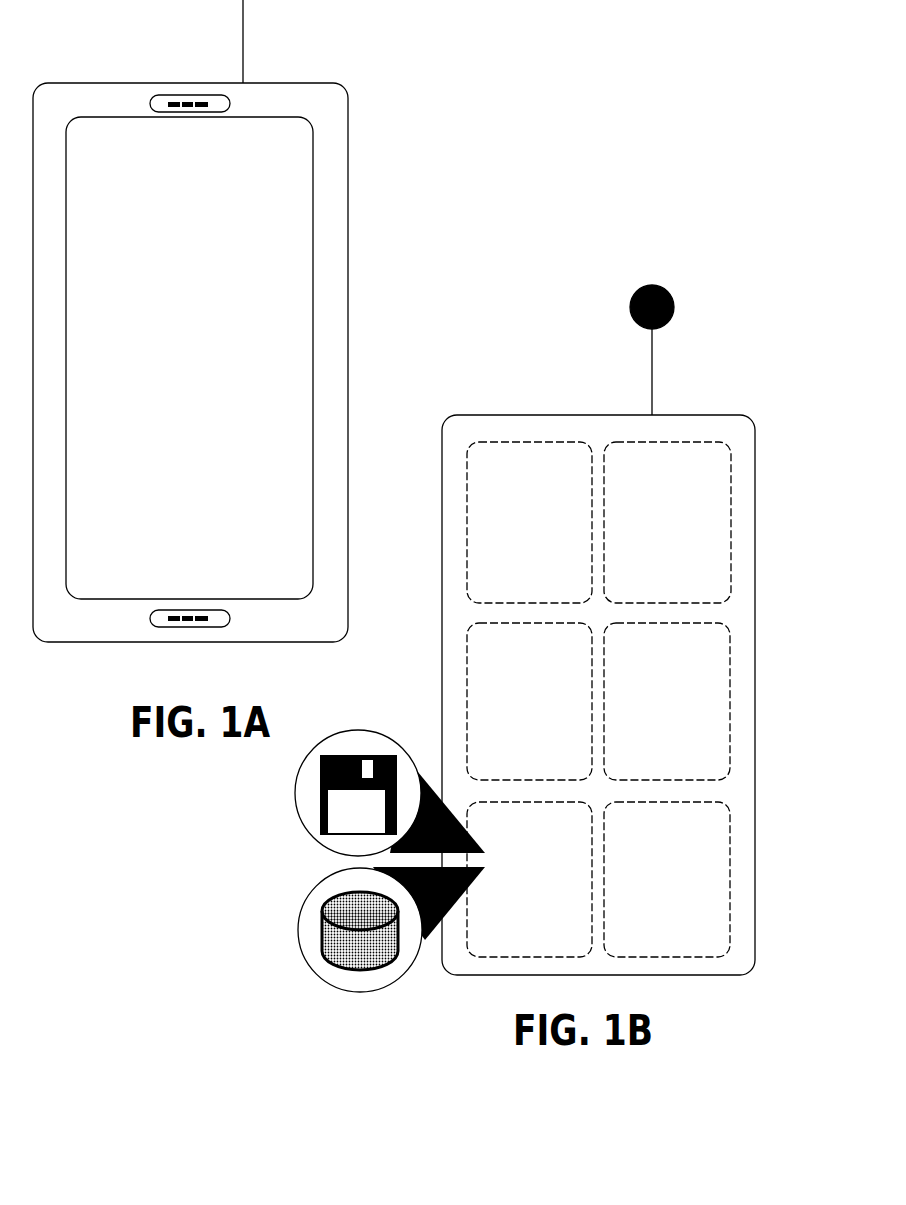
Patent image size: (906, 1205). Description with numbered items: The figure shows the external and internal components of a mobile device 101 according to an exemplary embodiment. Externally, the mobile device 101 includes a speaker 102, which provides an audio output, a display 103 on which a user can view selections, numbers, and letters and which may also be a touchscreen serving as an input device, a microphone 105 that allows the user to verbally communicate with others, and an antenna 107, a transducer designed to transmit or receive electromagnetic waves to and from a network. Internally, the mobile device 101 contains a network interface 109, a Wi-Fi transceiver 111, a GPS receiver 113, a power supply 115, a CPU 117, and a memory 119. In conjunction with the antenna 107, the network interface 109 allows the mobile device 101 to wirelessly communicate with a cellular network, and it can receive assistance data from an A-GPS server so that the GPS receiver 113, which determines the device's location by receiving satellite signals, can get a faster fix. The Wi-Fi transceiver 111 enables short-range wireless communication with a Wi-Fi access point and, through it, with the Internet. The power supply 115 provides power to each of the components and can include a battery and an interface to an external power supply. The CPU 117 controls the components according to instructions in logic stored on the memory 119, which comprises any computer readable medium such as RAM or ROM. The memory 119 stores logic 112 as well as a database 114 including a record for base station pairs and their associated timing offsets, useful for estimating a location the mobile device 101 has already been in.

In FIG. 1A, the mobile device 101 is at (348, 255).
In FIG. 1A, the speaker 102 is at (180, 93).
In FIG. 1A, the display 103 is at (313, 157).
In FIG. 1A, the microphone 105 is at (185, 627).
In FIG. 1A, the antenna 107 is at (265, 0).
In FIG. 1B, the network interface (NIC) 109 is at (516, 440).
In FIG. 1B, the Wi-Fi transceiver 111 is at (650, 440).
In FIG. 1B, the logic 112 is at (295, 788).
In FIG. 1B, the Global Positioning System (GPS) receiver 113 is at (712, 624).
In FIG. 1B, the database 114 is at (300, 938).
In FIG. 1B, the power supply 115 is at (468, 632).
In FIG. 1B, the central processing unit (CPU) 117 is at (712, 802).
In FIG. 1B, the memory 119 is at (480, 802).